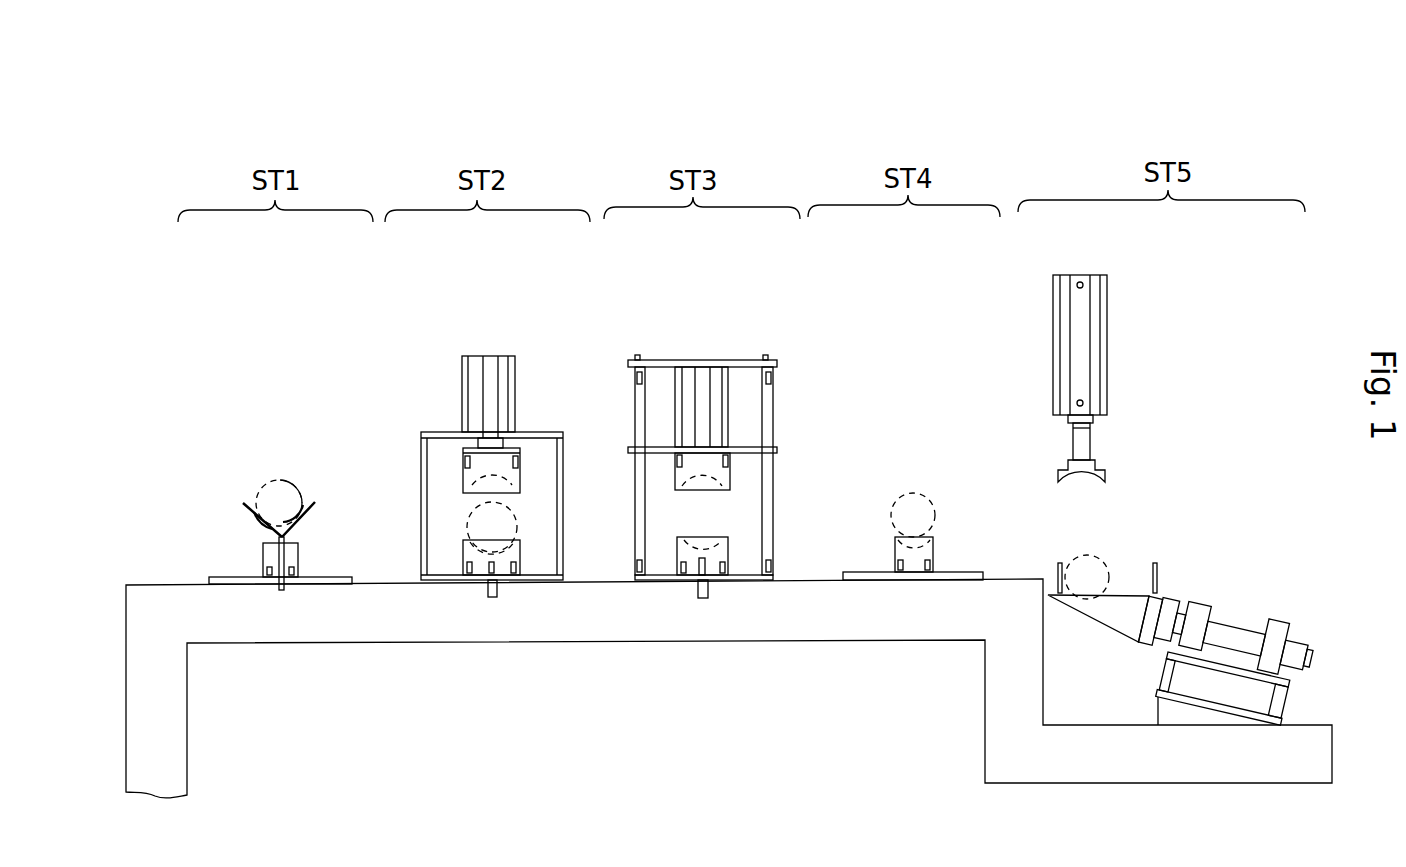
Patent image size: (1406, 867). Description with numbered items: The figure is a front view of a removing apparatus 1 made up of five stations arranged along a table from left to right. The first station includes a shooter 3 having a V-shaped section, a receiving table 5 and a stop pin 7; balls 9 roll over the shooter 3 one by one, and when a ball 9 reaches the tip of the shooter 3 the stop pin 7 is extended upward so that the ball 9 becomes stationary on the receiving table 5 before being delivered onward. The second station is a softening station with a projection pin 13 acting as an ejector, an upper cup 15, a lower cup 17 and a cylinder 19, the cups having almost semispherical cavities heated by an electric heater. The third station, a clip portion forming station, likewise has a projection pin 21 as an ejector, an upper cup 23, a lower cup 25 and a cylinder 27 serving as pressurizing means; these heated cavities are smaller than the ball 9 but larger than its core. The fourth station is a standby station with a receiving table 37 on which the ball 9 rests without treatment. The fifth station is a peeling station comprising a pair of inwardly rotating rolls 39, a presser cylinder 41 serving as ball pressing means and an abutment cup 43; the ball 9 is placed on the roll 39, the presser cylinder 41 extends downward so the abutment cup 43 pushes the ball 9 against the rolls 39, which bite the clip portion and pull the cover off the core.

The removing apparatus 1 is at (1238, 80).
The shooter 3 is at (243, 505).
The receiving table 5 is at (263, 558).
The stop pin 7 is at (300, 552).
The ball 9 is at (298, 483).
The projection pin 13 is at (496, 597).
The upper cup 15 is at (500, 484).
The lower cup 17 is at (460, 560).
The cylinder 19 is at (488, 368).
The projection pin 21 is at (706, 596).
The upper cup 23 is at (723, 477).
The lower cup 25 is at (680, 560).
The cylinder 27 is at (698, 380).
The receiving table 37 is at (905, 548).
The roll 39 is at (1117, 613).
The presser cylinder 41 is at (1082, 340).
The abutment cup 43 is at (1105, 473).